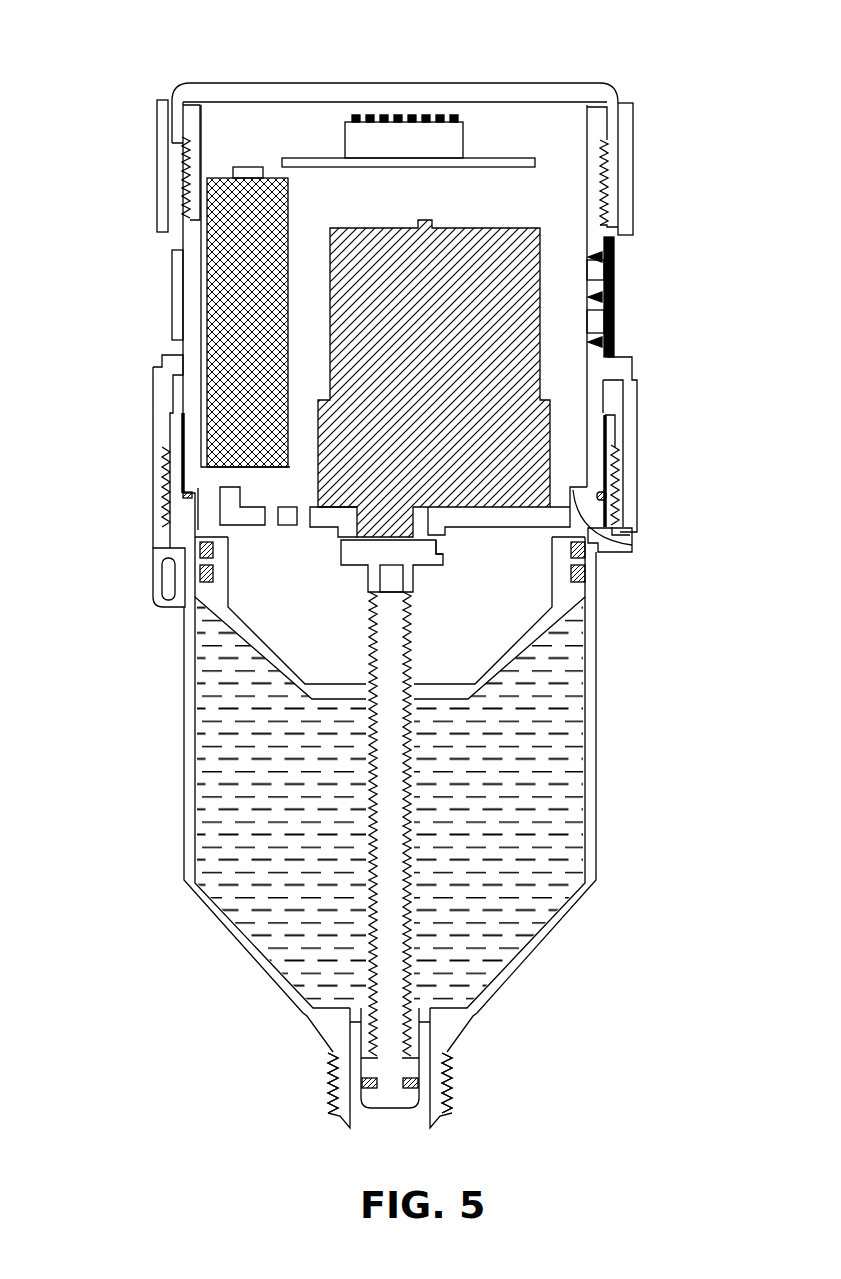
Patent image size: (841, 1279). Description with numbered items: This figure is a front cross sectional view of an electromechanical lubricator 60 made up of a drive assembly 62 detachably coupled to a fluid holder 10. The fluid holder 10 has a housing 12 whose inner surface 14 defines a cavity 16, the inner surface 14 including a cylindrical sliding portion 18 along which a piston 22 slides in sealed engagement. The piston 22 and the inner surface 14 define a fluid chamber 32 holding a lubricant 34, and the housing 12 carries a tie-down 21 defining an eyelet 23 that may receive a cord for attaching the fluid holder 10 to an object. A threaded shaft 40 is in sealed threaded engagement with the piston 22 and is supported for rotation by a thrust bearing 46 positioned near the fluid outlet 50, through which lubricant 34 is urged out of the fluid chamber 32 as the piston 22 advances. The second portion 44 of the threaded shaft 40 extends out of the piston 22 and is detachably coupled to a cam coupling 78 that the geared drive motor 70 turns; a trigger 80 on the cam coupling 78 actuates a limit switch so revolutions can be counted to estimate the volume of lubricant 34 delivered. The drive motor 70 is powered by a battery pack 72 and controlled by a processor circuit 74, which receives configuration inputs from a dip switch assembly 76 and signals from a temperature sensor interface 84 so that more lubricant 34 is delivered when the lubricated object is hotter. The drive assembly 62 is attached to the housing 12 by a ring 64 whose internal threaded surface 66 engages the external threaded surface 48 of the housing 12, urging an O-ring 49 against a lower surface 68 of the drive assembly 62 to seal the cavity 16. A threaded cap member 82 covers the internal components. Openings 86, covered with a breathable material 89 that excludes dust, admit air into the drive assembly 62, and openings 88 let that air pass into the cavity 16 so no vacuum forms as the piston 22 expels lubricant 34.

The fluid holder 10 is at (659, 696).
The housing 12 is at (598, 748).
The inner surface 14 is at (600, 540).
The cavity 16 is at (492, 611).
The sliding portion 18 is at (588, 686).
The tie-down 21 is at (153, 578).
The piston 22 is at (230, 622).
The eyelet 23 is at (168, 588).
The fluid chamber 32 is at (296, 792).
The lubricant 34 is at (514, 792).
The threaded shaft 40 is at (372, 668).
The second portion 44 is at (383, 575).
The thrust bearing 46 is at (420, 1082).
The external threaded surface 48 is at (620, 475).
The O-ring 49 is at (604, 496).
The fluid outlet 50 is at (360, 1082).
The electromechanical lubricator 60 is at (120, 46).
The drive assembly 62 is at (82, 258).
The ring 64 is at (640, 405).
The internal threaded surface 66 is at (622, 478).
The lower surface 68 is at (632, 551).
The drive motor 70 is at (490, 268).
The battery pack 72 is at (235, 262).
The processor circuit 74 is at (500, 158).
The dip switch assembly 76 is at (352, 152).
The cam coupling 78 is at (342, 553).
The trigger 80 is at (440, 556).
The threaded cap member 82 is at (157, 160).
The temperature sensor interface 84 is at (172, 310).
The openings 86 is at (614, 265).
The openings 88 is at (313, 507).
The breathable material 89 is at (614, 250).